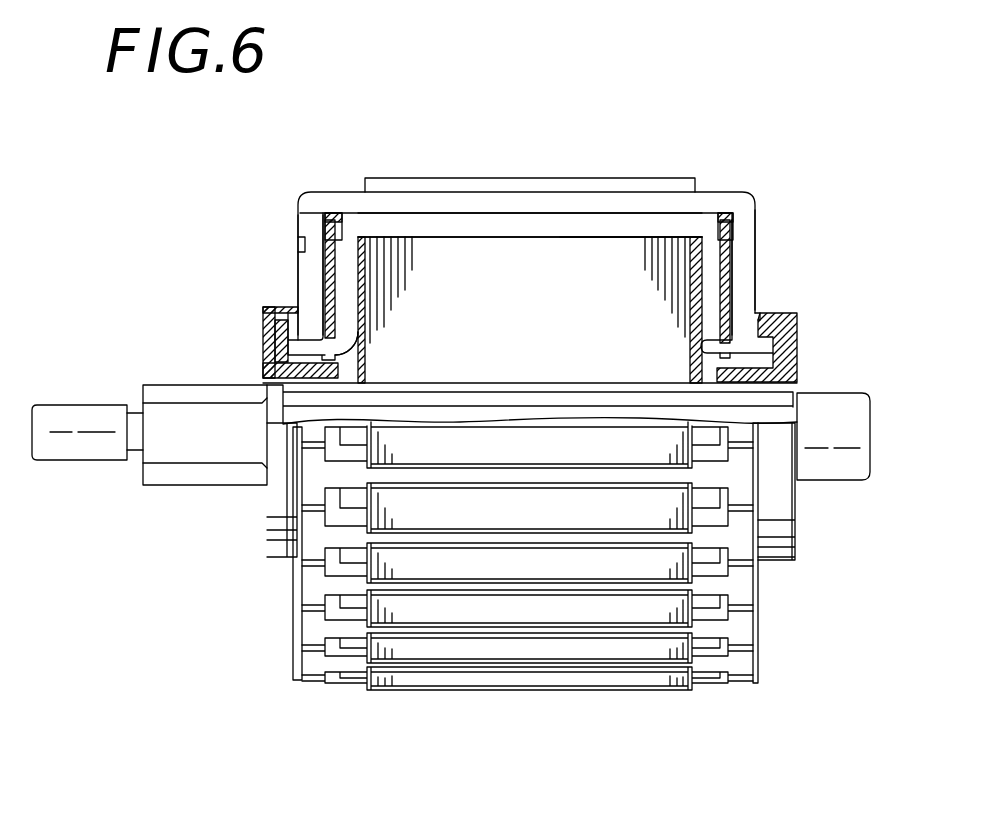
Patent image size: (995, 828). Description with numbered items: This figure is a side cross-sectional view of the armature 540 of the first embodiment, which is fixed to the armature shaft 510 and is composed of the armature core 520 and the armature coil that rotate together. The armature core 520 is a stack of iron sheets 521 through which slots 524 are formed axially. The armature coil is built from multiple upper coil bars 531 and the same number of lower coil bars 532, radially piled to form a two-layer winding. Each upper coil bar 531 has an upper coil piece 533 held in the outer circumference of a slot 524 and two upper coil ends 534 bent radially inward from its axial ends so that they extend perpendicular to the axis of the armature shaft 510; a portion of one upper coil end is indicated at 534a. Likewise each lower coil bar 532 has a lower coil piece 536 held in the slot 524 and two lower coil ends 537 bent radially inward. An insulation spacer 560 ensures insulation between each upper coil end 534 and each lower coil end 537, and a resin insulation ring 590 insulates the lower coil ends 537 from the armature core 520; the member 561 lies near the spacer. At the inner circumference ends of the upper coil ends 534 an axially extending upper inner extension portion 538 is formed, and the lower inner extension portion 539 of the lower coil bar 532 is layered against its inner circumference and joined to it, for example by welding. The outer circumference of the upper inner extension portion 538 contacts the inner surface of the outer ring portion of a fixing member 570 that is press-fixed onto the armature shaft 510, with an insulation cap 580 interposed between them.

The armature shaft 510 is at (200, 433).
The armature core 520 is at (690, 688).
The iron sheets 521 is at (710, 227).
The slot 524 is at (507, 237).
The upper coil bar 531 is at (398, 187).
The lower coil bar 532 is at (445, 208).
The upper coil piece 533 is at (558, 210).
The upper coil end 534 is at (312, 225).
The side wall corner portion 534a is at (298, 204).
The lower coil piece 536 is at (593, 232).
The lower coil end 537 is at (330, 290).
The upper inner extension portion 538 is at (266, 312).
The lower inner extension portion 539 is at (272, 345).
The armature 540 is at (735, 137).
The insulation spacer 560 is at (325, 258).
The magnet holder clip 561 is at (334, 225).
The fixing member 570 is at (767, 308).
The insulation cap 580 is at (800, 333).
The insulation ring 590 is at (358, 320).